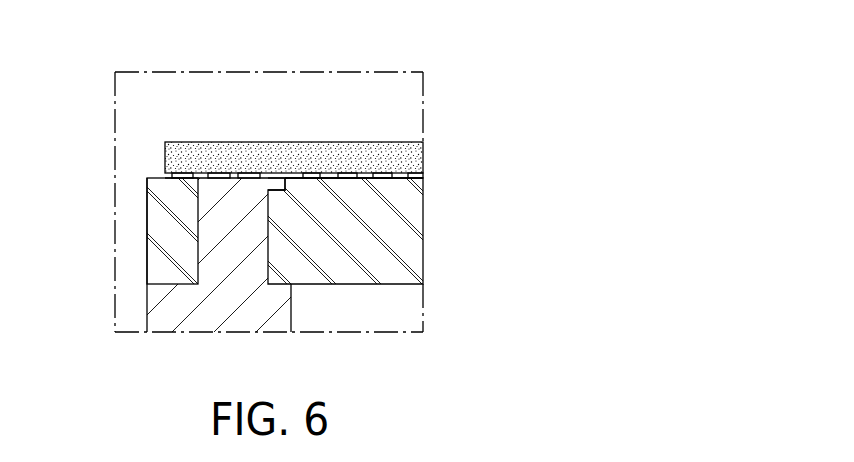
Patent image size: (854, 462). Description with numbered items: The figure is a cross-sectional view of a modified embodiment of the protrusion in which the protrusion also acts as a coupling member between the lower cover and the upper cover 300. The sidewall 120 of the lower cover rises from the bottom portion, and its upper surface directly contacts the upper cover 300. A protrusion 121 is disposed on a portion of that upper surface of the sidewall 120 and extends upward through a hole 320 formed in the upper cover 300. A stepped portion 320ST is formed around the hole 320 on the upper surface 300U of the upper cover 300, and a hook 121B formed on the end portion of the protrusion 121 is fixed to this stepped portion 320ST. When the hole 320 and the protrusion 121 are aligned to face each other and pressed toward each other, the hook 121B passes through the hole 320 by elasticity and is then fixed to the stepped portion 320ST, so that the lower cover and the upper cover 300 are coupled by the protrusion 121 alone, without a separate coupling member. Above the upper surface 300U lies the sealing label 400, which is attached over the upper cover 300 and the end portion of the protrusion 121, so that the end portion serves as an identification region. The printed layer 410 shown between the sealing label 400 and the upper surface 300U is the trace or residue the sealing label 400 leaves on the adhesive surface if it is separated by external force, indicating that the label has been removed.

The sidewall 120 is at (158, 311).
The protrusion 121 is at (212, 210).
The hook 121B is at (283, 190).
The upper cover 300 is at (410, 210).
The upper surface of the upper cover 300U is at (367, 177).
The hole 320 is at (267, 227).
The stepped portion 320ST is at (277, 186).
The sealing label 400 is at (418, 158).
The printed layer 410 is at (412, 175).